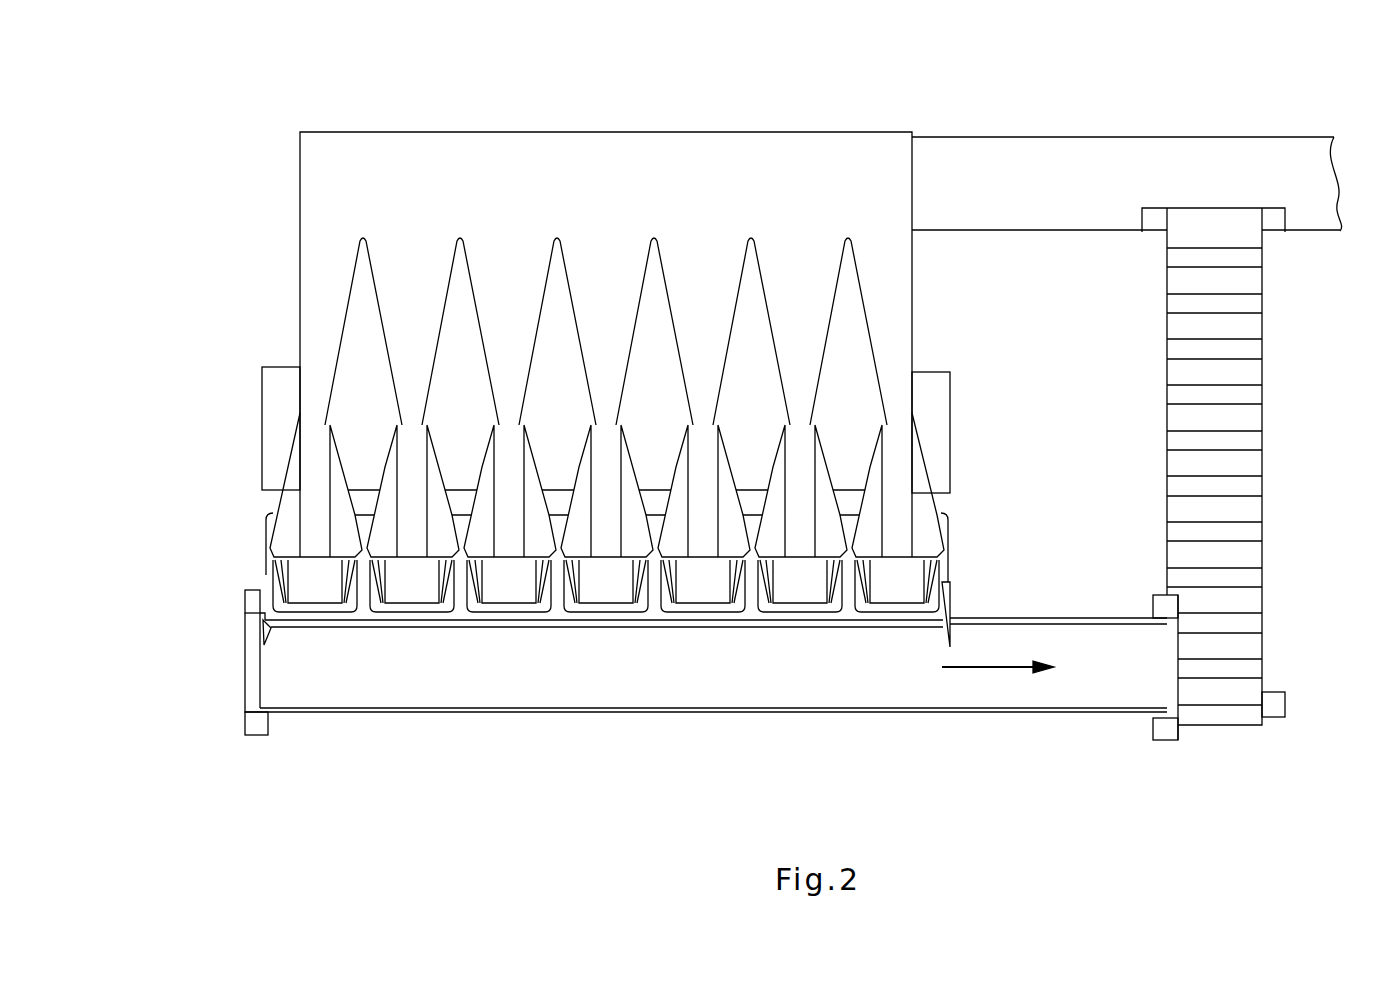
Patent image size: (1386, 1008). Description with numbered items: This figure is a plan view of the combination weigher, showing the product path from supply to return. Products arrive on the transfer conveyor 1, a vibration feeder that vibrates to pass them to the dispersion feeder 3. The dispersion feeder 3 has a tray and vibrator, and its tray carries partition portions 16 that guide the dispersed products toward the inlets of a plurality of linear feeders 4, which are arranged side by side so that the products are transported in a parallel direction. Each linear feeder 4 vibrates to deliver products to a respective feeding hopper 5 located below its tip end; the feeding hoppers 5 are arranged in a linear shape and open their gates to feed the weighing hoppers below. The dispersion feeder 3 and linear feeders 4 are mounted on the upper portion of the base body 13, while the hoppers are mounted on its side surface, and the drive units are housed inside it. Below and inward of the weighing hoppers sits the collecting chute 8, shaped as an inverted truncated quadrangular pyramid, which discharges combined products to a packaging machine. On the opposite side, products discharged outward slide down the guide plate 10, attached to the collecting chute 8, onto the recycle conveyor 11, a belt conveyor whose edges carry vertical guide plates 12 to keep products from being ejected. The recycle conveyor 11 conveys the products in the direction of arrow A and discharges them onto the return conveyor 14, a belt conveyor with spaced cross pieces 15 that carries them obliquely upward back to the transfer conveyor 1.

The transfer conveyor 1 is at (1058, 137).
The dispersion feeder 3 is at (648, 132).
The linear feeder 4 is at (282, 503).
The feeding hopper 5 is at (305, 583).
The collecting chute 8 is at (950, 547).
The guide plate 10 is at (952, 605).
The recycle conveyor 11 is at (668, 716).
The guide plates 12 is at (406, 713).
The base body 13 is at (950, 431).
The return conveyor 14 is at (1263, 417).
The cross pieces 15 is at (1223, 349).
The partition portions 16 is at (355, 277).
The arrow A is at (990, 671).